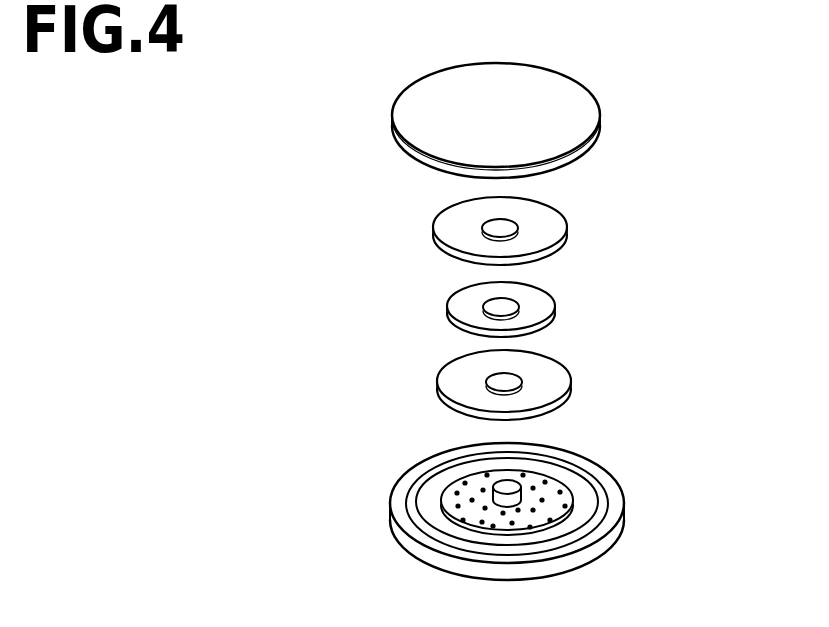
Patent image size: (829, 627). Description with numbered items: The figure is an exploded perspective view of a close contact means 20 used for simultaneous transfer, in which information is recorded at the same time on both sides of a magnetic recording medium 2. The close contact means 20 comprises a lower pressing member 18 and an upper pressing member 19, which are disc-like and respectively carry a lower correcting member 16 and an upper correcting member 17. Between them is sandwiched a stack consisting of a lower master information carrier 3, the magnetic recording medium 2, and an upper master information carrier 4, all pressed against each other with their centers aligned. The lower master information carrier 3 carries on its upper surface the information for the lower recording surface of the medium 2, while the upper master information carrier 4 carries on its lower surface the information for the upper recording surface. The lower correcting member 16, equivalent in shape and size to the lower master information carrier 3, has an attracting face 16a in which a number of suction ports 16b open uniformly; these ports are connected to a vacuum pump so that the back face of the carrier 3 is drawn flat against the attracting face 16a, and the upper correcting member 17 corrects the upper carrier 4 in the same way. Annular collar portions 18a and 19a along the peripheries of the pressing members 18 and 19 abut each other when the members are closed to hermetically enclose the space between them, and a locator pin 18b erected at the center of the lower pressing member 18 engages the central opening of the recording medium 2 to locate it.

The close contact means 20 is at (288, 44).
The upper pressing member 19 is at (556, 88).
The annular collar portion 19a is at (410, 157).
The upper correcting member 17 is at (590, 153).
The upper master information carrier 4 is at (549, 226).
The magnetic recording medium 2 is at (540, 306).
The lower master information carrier 3 is at (552, 378).
The lower pressing member 18 is at (622, 511).
The annular collar portion 18a is at (440, 544).
The locator pin 18b is at (522, 496).
The lower correcting member 16 is at (566, 480).
The attracting face 16a is at (451, 481).
The suction ports 16b is at (459, 504).